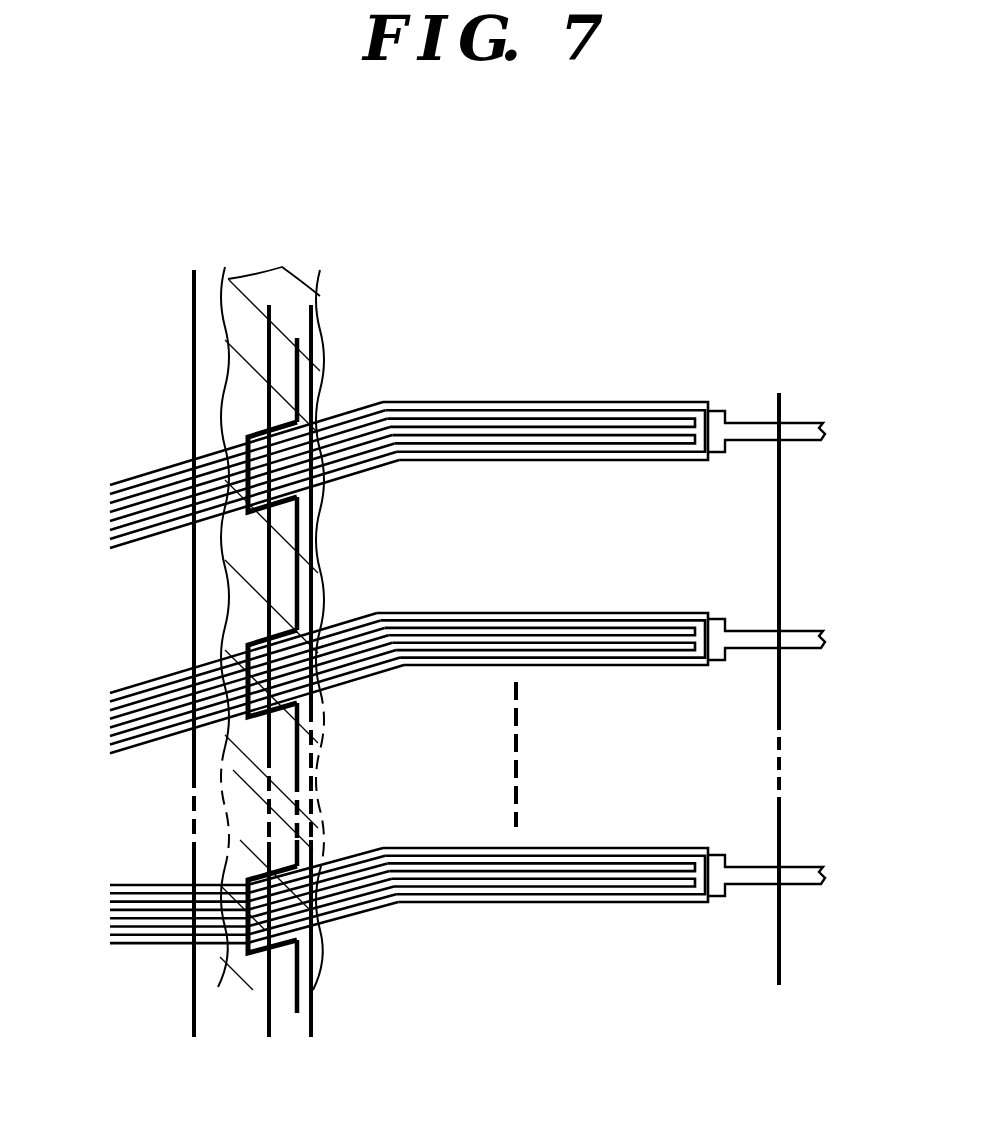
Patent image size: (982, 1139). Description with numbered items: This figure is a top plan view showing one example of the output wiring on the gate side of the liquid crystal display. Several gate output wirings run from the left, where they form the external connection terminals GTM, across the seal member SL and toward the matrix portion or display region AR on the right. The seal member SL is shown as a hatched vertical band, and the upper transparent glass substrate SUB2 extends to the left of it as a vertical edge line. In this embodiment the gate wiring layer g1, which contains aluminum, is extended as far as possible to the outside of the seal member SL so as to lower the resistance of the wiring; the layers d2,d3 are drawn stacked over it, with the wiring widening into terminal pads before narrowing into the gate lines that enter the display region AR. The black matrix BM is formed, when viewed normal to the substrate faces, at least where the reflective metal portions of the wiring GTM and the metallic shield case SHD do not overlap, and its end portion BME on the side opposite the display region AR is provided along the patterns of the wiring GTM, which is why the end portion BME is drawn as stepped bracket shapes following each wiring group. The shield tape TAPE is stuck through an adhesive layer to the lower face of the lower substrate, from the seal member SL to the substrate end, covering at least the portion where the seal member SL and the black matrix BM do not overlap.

The upper transparent glass substrate SUB2 is at (183, 629).
The seal member SL is at (283, 267).
The black matrix BM is at (323, 397).
The end portion of the black matrix BME is at (248, 435).
The metallic shield case SHD is at (265, 838).
The gate wiring (external connection terminal) GTM is at (100, 518).
The shield tape TAPE is at (208, 672).
The second and third conductive layers d2,d3 is at (542, 593).
The gate wiring layer g1 is at (547, 452).
The matrix portion (display region) AR is at (779, 473).